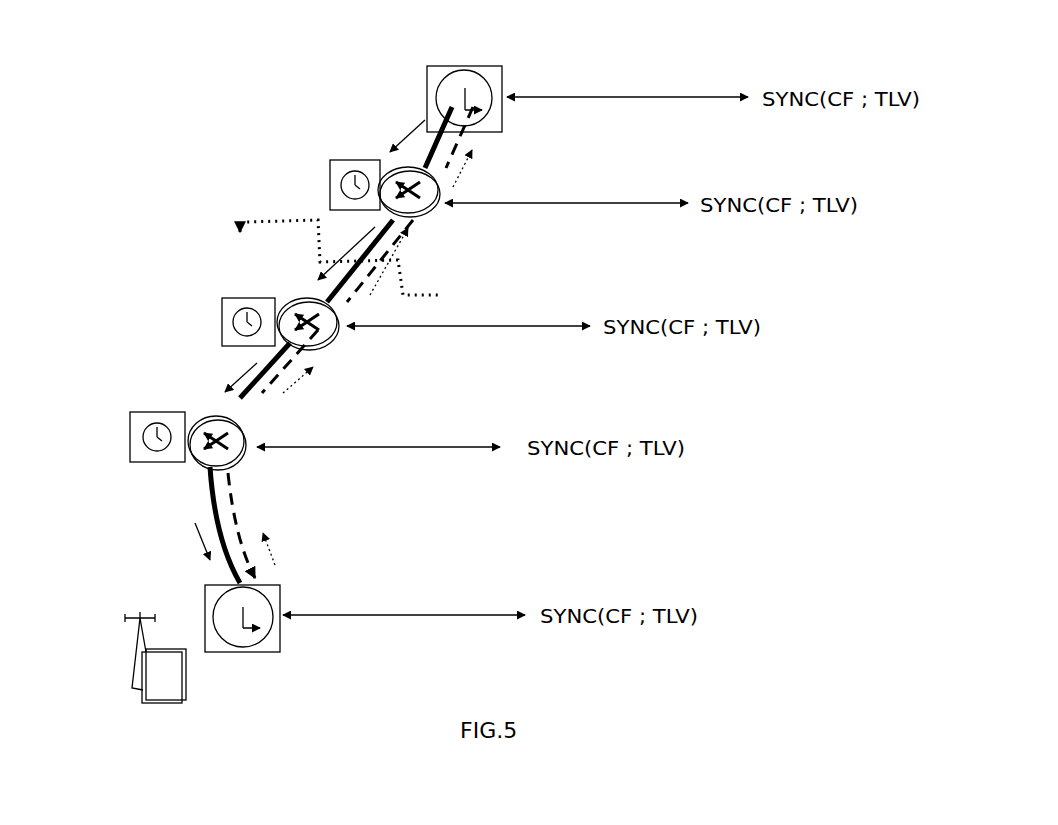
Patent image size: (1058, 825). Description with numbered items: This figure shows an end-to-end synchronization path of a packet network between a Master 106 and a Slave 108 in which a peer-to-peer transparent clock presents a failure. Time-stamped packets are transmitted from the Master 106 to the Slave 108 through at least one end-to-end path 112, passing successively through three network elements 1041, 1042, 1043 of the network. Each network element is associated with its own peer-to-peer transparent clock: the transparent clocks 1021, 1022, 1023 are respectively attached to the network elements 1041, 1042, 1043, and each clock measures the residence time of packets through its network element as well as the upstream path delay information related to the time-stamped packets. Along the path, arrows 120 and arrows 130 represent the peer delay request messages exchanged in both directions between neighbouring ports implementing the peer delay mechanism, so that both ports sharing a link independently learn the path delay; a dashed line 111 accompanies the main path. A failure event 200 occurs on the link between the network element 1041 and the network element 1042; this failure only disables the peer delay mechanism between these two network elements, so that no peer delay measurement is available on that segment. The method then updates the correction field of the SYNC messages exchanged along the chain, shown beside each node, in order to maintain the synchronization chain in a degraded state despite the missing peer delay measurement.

The Master 106 is at (427, 68).
The Slave 108 is at (272, 647).
The P2P transparent clock 1021 is at (330, 162).
The P2P transparent clock 1022 is at (222, 338).
The P2P transparent clock 1023 is at (130, 455).
The network element 1041 is at (438, 208).
The network element 1042 is at (325, 344).
The network element 1043 is at (238, 434).
The arrows representing P_REQ messages 120 is at (407, 130).
The arrows representing P_REQ messages 130 is at (475, 162).
The failure event 200 is at (237, 234).
The end-to-end path 112 is at (207, 497).
The secondary link 111 is at (233, 507).